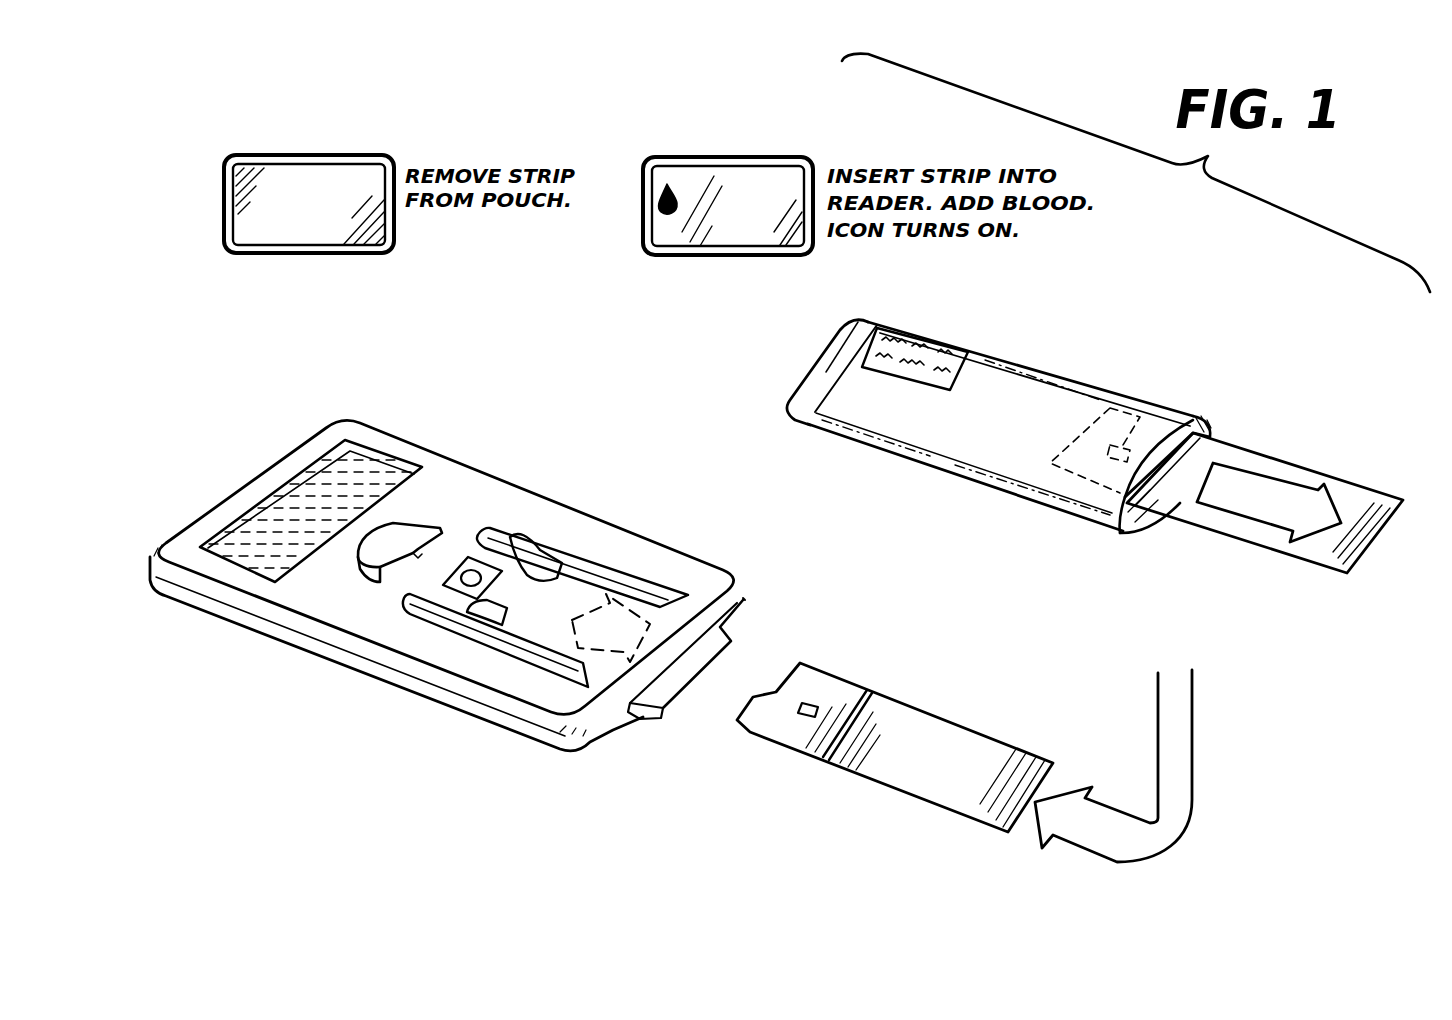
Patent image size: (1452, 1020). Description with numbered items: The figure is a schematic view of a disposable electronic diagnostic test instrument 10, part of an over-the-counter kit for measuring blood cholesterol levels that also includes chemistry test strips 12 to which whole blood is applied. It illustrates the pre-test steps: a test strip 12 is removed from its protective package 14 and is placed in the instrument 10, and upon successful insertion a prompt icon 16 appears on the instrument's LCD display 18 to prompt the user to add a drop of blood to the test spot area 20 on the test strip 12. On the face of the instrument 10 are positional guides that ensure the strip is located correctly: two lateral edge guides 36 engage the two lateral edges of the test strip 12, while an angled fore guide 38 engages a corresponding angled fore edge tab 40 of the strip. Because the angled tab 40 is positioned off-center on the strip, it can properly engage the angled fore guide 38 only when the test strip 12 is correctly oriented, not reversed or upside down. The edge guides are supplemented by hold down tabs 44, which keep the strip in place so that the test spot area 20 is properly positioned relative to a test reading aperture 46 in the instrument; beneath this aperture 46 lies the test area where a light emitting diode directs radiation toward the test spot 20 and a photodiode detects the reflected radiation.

The disposable electronic diagnostic test instrument 10 is at (470, 392).
The test strip 12 is at (1273, 457).
The protective package 14 is at (1040, 362).
The prompt icon 16 is at (656, 194).
The LCD display 18 is at (290, 155).
The test spot area 20 is at (1162, 401).
The lateral edge guides 36 is at (590, 565).
The angled fore guide 38 is at (400, 520).
The angled fore edge tab 40 is at (747, 712).
The hold down tabs 44 is at (500, 530).
The test reading aperture 46 is at (483, 572).